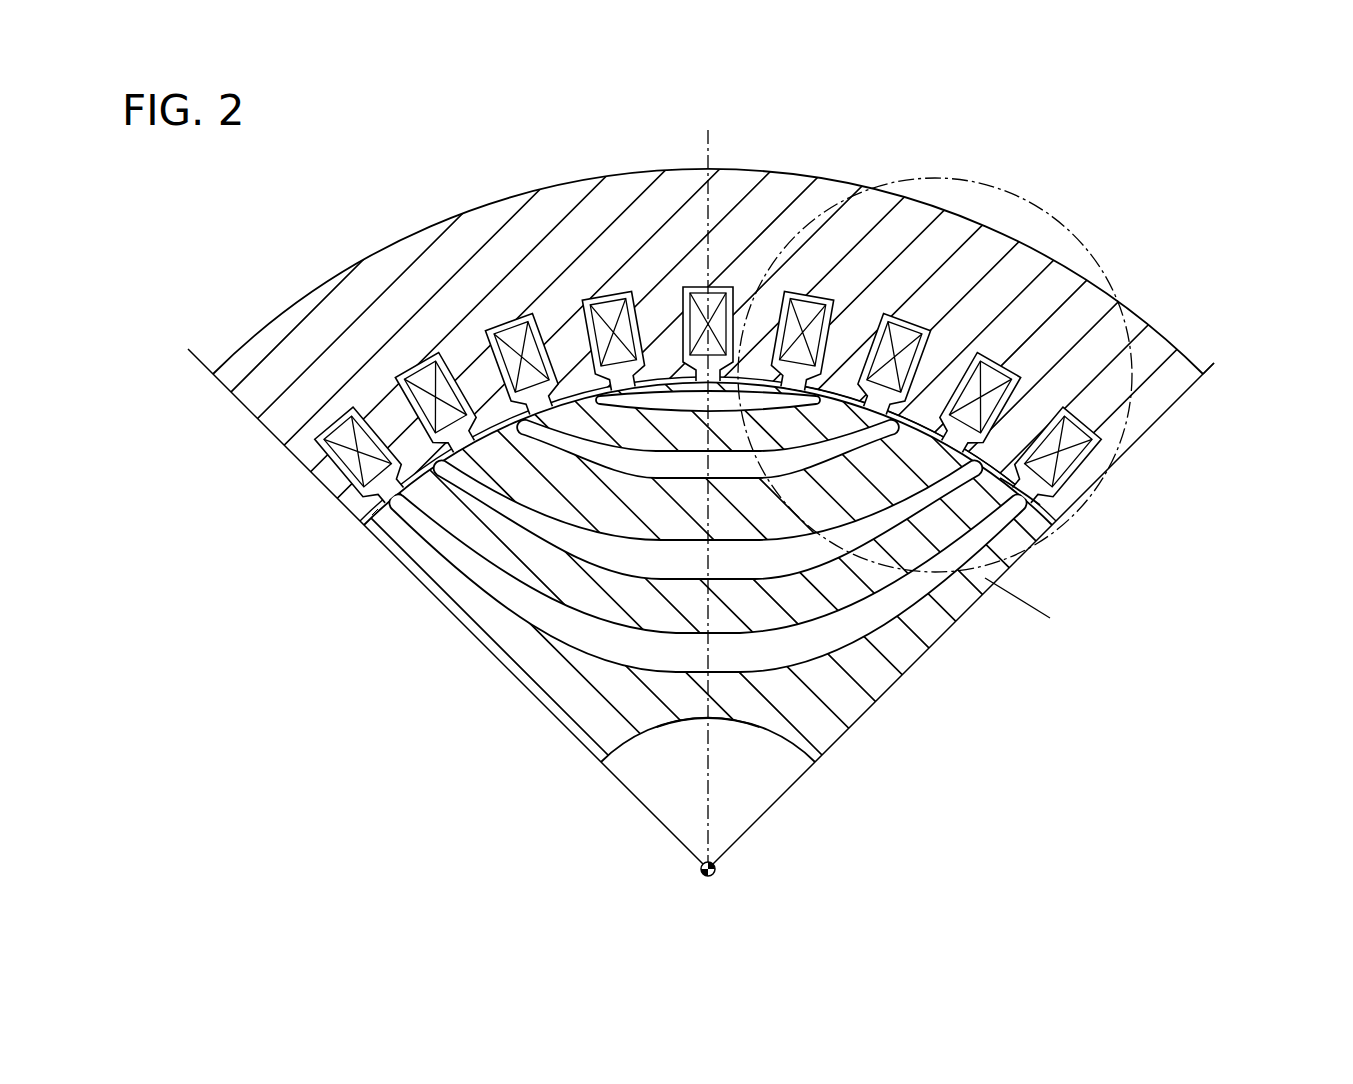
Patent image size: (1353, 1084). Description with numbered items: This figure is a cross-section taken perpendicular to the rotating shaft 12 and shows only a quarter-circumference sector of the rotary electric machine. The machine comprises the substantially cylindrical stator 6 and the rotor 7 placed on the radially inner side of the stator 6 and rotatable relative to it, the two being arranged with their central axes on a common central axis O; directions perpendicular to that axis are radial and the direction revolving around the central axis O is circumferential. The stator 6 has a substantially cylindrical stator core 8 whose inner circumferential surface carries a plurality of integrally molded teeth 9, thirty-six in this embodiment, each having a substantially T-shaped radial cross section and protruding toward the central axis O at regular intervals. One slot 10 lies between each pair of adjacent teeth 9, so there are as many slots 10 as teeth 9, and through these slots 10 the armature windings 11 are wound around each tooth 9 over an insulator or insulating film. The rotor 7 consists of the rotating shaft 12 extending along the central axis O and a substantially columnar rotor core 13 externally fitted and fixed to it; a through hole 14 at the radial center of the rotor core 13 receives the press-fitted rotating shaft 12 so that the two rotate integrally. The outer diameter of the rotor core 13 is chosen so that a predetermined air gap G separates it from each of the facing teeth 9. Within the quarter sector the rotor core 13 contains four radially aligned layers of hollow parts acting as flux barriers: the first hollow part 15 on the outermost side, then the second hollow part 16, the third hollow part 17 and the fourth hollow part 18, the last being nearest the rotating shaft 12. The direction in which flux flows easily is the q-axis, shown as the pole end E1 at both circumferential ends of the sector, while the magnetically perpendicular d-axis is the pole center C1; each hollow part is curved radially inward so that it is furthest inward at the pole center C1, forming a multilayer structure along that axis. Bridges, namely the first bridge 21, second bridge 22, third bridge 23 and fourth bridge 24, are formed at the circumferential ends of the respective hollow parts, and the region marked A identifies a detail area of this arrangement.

The stator 6 is at (1003, 231).
The rotor 7 is at (950, 640).
The stator core 8 is at (625, 183).
The teeth 9 is at (736, 593).
The slots 10 is at (508, 345).
The armature windings 11 is at (333, 478).
The rotating shaft 12 is at (760, 795).
The rotor core 13 is at (1033, 607).
The through hole 14 is at (658, 730).
The first hollow part 15 is at (657, 400).
The second hollow part 16 is at (583, 432).
The third hollow part 17 is at (560, 482).
The fourth hollow part 18 is at (533, 510).
The first bridge 21 is at (876, 325).
The second bridge 22 is at (950, 330).
The third bridge 23 is at (1018, 385).
The fourth bridge 24 is at (1028, 472).
The region A is at (1135, 355).
The pole center C1 is at (710, 150).
The pole end E1 is at (1214, 365).
The air gap G is at (380, 512).
The central axis O is at (716, 872).